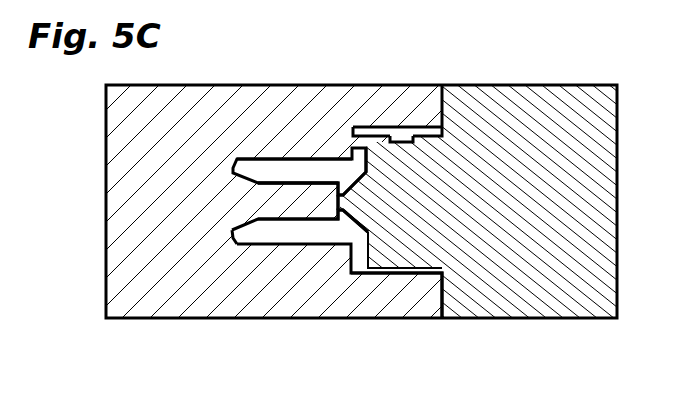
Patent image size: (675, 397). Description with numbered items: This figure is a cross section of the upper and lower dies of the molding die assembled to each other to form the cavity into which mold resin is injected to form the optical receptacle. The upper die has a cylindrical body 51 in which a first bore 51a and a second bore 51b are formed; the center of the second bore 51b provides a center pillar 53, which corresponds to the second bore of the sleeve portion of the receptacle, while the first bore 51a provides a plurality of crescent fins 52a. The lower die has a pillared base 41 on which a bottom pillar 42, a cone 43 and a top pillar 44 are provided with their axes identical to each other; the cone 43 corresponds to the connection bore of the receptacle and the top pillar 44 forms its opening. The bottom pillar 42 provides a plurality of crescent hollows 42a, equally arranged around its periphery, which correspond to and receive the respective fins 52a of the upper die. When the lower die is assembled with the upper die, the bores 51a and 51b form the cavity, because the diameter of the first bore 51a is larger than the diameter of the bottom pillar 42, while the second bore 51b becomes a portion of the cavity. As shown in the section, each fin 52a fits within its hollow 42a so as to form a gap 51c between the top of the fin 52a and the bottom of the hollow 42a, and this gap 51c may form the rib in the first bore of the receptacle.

The pillared base 41 is at (518, 273).
The bottom pillar 42 is at (411, 218).
The crescent hollow 42a is at (405, 146).
The cone 43 is at (368, 210).
The top pillar 44 is at (347, 214).
The body 51 is at (232, 297).
The first bore 51a is at (436, 276).
The second bore 51b is at (315, 175).
The gap 51c is at (408, 142).
The crescent fin 52a is at (378, 133).
The center pillar 53 is at (285, 205).